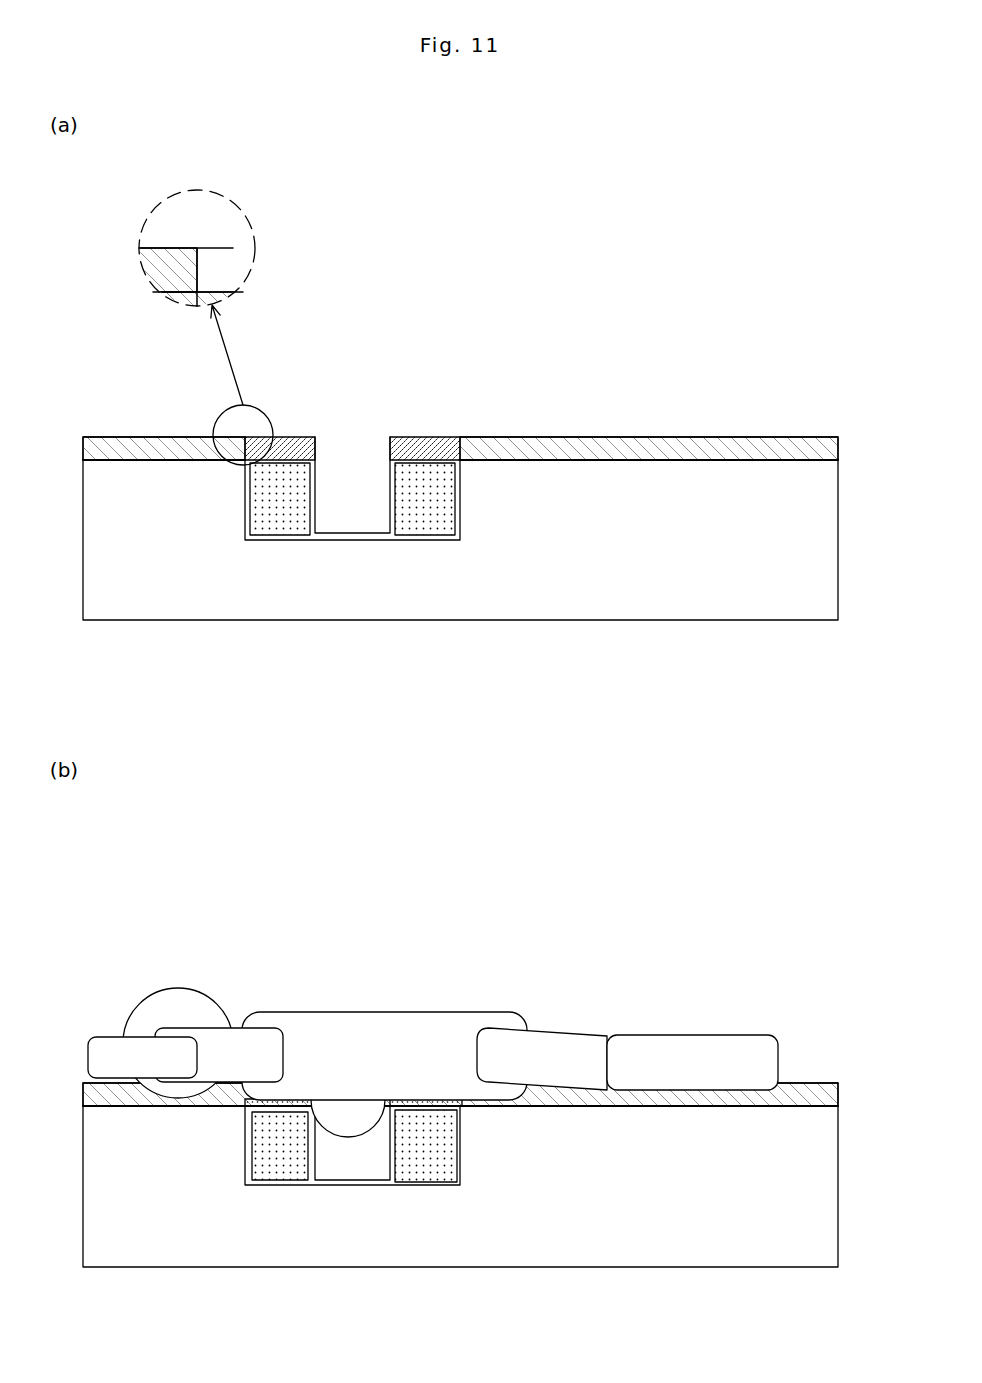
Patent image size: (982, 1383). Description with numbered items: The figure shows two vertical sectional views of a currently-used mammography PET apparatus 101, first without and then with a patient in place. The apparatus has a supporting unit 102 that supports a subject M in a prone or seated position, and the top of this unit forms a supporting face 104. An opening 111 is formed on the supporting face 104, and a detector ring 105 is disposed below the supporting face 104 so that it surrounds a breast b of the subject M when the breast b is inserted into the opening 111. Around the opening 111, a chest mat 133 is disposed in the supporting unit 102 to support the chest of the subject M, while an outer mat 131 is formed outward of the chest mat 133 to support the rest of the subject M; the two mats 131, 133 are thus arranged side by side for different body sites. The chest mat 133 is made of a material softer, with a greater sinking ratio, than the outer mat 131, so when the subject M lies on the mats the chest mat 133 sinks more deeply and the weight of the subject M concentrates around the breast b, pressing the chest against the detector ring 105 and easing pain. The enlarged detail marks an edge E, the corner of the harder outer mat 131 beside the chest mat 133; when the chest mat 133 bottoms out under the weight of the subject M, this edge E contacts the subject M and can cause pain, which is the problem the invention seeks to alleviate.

The mammography PET apparatus 101 is at (625, 337).
The supporting unit 102 is at (668, 620).
The supporting face 104 is at (104, 445).
The detector ring 105 is at (460, 553).
The opening 111 is at (360, 424).
The outer mat 131 is at (170, 453).
The chest mat 133 is at (292, 442).
The edge E is at (204, 230).
The subject M is at (737, 1042).
The breast b is at (333, 1108).